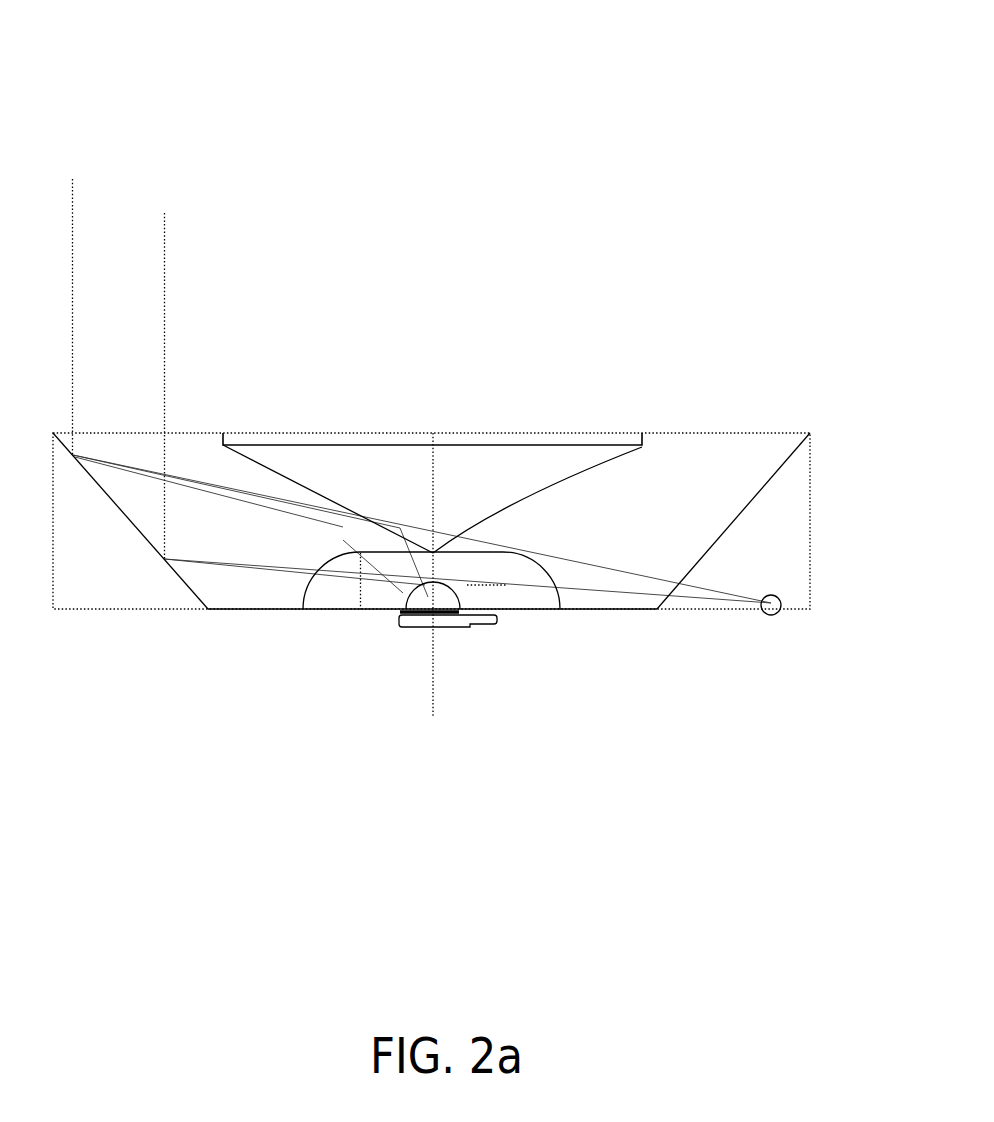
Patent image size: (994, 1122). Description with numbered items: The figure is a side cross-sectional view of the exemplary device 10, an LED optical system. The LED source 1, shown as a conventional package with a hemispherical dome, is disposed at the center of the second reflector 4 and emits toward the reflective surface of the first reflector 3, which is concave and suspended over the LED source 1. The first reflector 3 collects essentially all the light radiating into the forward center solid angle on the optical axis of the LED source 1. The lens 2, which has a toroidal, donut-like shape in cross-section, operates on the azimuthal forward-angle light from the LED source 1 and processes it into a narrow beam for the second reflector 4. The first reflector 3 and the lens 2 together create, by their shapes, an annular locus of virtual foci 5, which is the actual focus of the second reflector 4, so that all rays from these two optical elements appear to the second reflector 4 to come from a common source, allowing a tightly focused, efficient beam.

The device 10 is at (623, 277).
The LED source 1 is at (416, 632).
The lens 2 is at (566, 575).
The first reflector 3 is at (573, 480).
The second reflector 4 is at (131, 584).
The annular locus of virtual foci 5 is at (780, 628).